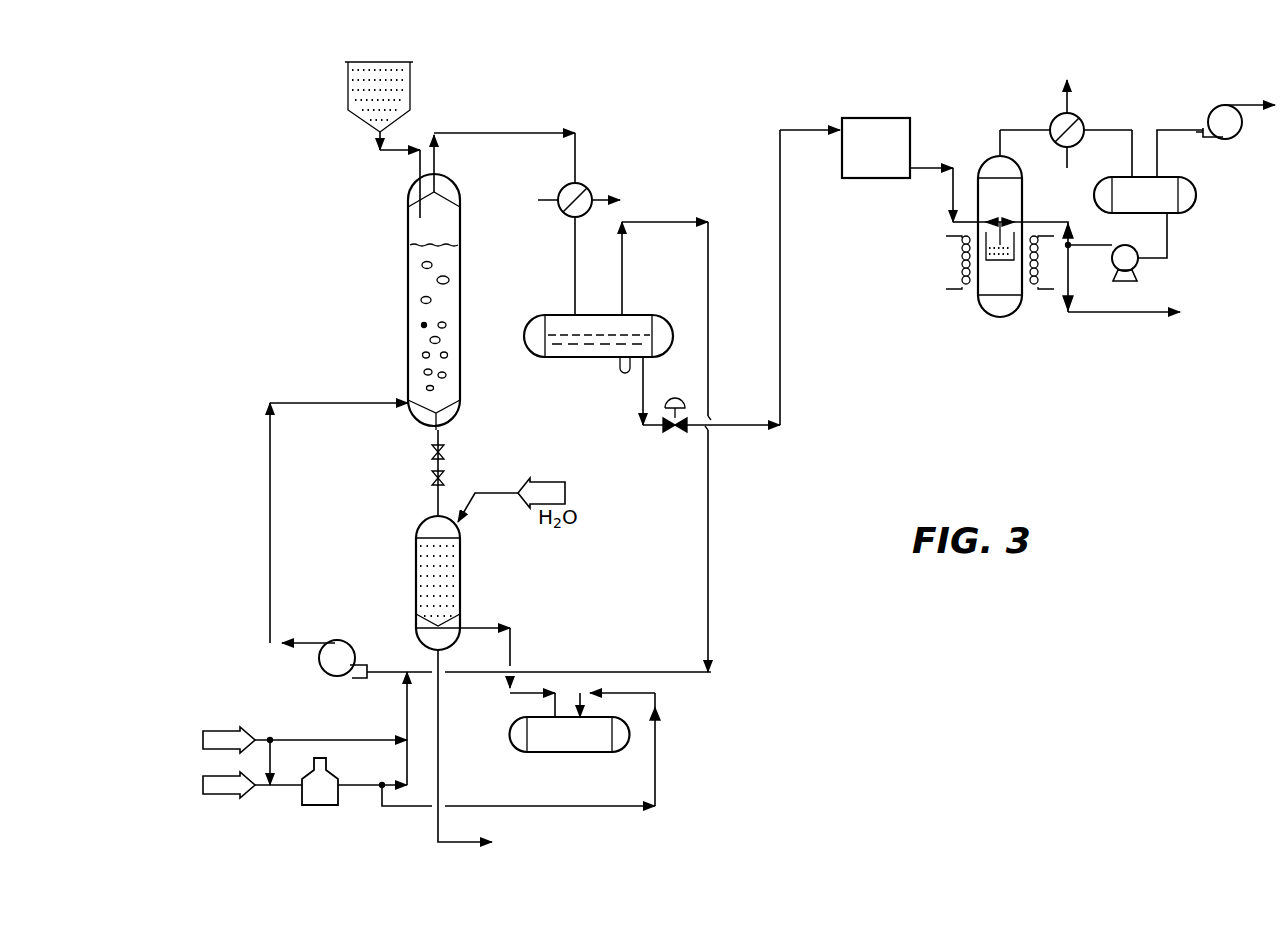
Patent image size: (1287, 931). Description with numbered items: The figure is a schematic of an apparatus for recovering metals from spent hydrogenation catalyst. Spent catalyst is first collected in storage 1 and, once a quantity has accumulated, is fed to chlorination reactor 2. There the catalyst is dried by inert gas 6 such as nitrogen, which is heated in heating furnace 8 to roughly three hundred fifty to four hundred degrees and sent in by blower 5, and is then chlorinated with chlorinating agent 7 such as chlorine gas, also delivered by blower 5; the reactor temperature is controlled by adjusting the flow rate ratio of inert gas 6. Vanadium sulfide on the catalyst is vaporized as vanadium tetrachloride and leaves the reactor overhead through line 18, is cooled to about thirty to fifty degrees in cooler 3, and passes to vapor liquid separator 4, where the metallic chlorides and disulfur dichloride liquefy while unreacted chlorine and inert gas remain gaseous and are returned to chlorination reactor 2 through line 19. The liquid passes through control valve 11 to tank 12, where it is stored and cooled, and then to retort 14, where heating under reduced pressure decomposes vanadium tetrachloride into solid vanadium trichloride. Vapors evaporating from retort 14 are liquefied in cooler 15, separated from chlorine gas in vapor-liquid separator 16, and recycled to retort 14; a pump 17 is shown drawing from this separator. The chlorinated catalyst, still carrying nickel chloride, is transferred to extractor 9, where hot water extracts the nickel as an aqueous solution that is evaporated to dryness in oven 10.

The storage 1 is at (378, 140).
The chlorination reactor 2 is at (424, 302).
The cooler 3 is at (579, 243).
The vapor liquid separator 4 is at (682, 277).
The blower 5 is at (490, 540).
The inert gas 6 is at (243, 798).
The chlorinating agent 7 is at (295, 728).
The heating furnace 8 is at (367, 795).
The extractor 9 is at (425, 540).
The oven 10 is at (570, 747).
The control valve 11 is at (676, 425).
The tank 12 is at (910, 157).
The retort 14 is at (1000, 230).
The cooler 15 is at (1066, 128).
The vapor-liquid separator 16 is at (1158, 194).
The vacuum pump 17 is at (1235, 122).
The line 18 is at (504, 151).
The line 19 is at (666, 435).